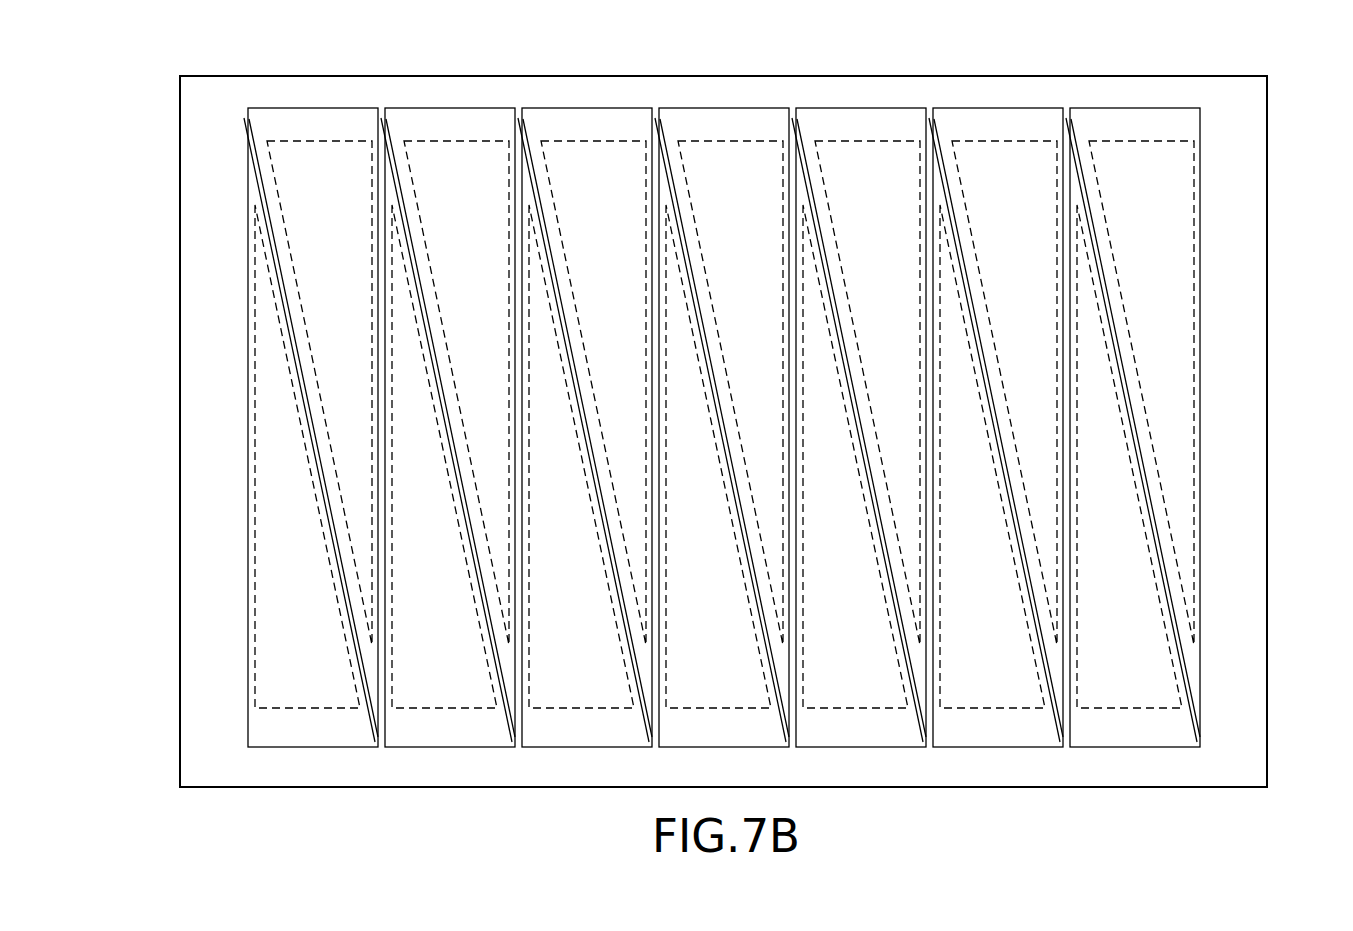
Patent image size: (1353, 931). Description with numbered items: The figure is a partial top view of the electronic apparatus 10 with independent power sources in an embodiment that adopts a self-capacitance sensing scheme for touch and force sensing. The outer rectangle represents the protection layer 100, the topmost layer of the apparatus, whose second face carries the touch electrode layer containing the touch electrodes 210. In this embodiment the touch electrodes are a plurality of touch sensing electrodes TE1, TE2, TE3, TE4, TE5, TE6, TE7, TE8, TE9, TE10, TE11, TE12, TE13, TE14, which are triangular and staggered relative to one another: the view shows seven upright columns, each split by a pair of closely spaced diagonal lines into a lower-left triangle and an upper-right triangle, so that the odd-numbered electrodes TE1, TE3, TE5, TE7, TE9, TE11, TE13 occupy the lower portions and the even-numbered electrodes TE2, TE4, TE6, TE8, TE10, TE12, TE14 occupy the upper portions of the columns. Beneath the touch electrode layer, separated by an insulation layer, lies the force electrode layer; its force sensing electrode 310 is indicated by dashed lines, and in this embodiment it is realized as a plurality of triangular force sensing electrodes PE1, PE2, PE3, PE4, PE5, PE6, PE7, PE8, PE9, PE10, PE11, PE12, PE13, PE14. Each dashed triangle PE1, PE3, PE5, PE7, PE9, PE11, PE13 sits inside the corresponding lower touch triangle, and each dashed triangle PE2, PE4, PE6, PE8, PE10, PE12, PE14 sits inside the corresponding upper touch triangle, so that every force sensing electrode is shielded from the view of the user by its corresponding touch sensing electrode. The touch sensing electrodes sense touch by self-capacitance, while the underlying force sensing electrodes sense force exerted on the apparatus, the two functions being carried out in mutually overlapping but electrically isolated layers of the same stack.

The electronic apparatus 10 is at (709, 41).
The protection layer 100 is at (192, 420).
The first touch electrodes 210 is at (263, 726).
The force sensing electrode 310 is at (1160, 190).
The touch sensing electrode TE1 is at (311, 427).
The touch sensing electrode TE2 is at (312, 120).
The touch sensing electrode TE3 is at (448, 427).
The touch sensing electrode TE4 is at (449, 120).
The touch sensing electrode TE5 is at (585, 427).
The touch sensing electrode TE6 is at (586, 120).
The touch sensing electrode TE7 is at (722, 427).
The touch sensing electrode TE8 is at (723, 120).
The touch sensing electrode TE9 is at (859, 427).
The touch sensing electrode TE10 is at (860, 120).
The touch sensing electrode TE11 is at (996, 427).
The touch sensing electrode TE12 is at (997, 120).
The touch sensing electrode TE13 is at (1133, 427).
The touch sensing electrode TE14 is at (1134, 120).
The triangular force sensing electrode PE1 is at (307, 456).
The triangular force sensing electrode PE2 is at (319, 393).
The triangular force sensing electrode PE3 is at (444, 456).
The triangular force sensing electrode PE4 is at (456, 393).
The triangular force sensing electrode PE5 is at (581, 456).
The triangular force sensing electrode PE6 is at (593, 393).
The triangular force sensing electrode PE7 is at (718, 456).
The triangular force sensing electrode PE8 is at (730, 393).
The triangular force sensing electrode PE9 is at (855, 456).
The triangular force sensing electrode PE10 is at (867, 393).
The triangular force sensing electrode PE11 is at (992, 456).
The triangular force sensing electrode PE12 is at (1004, 393).
The triangular force sensing electrode PE13 is at (1129, 456).
The triangular force sensing electrode PE14 is at (1141, 393).